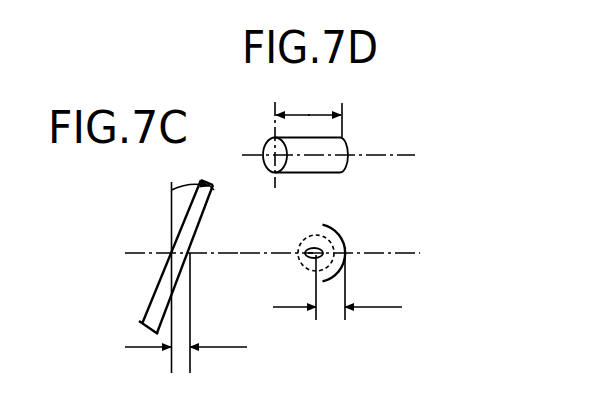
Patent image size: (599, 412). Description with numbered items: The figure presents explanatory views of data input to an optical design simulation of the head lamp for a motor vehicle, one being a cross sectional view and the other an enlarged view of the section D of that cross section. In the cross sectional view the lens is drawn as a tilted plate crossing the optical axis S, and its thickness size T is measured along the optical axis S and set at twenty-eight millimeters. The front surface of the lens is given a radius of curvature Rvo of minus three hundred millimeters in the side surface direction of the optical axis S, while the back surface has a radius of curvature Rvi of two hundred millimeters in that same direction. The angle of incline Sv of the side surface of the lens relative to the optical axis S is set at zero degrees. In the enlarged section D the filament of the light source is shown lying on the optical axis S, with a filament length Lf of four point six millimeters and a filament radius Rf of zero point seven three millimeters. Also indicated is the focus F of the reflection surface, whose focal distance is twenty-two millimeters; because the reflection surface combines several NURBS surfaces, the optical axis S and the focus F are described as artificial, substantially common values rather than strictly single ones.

In FIG. 7D, the radius of filament Rf is at (267, 143).
In FIG. 7D, the length of filament Lf is at (309, 116).
In FIG. 7D, the section D is at (298, 245).
In FIG. 7C, the optical axis S is at (182, 242).
In FIG. 7D, the optical axis S is at (330, 244).
In FIG. 7D, the focus F is at (337, 285).
In FIG. 7C, the angle of incline of side surface Sv is at (193, 267).
In FIG. 7C, the radius of curvature of front surface Rvo is at (171, 250).
In FIG. 7C, the radius of curvature of back surface Rvi is at (192, 256).
In FIG. 7C, the thickness of lens T is at (186, 313).